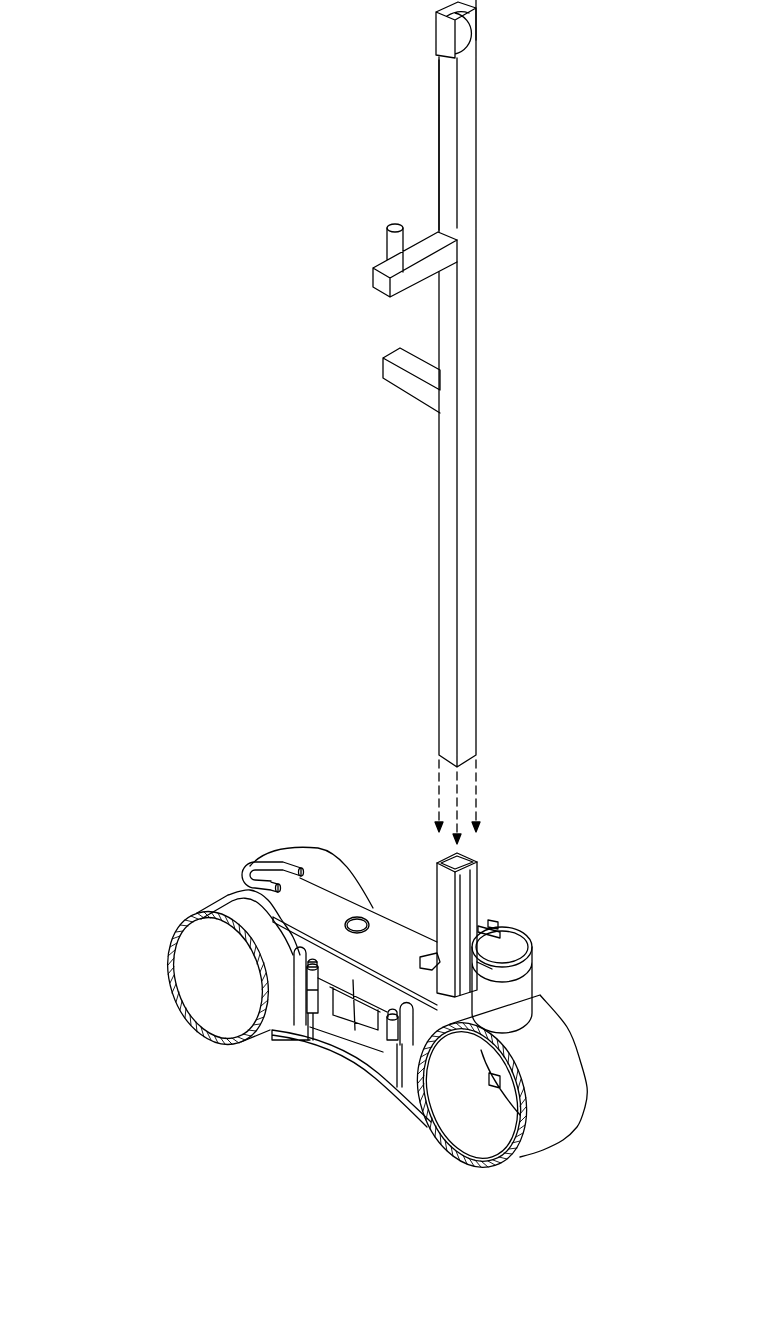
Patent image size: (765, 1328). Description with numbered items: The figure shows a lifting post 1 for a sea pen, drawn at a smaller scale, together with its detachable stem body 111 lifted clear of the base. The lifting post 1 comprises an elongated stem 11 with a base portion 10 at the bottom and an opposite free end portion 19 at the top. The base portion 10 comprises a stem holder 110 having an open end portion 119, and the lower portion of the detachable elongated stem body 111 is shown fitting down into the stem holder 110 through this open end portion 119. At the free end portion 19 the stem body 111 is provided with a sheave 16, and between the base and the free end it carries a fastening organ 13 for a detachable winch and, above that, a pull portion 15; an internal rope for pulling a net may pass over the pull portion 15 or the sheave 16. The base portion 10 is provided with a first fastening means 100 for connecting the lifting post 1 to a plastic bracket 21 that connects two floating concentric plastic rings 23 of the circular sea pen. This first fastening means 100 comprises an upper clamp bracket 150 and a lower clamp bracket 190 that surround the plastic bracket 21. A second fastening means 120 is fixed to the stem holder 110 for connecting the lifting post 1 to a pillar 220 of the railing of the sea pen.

The lifting post 1 is at (273, 307).
The first fastening means 100 is at (203, 853).
The base portion 10 is at (435, 945).
The elongated stem 11 is at (478, 892).
The stem holder 110 is at (475, 911).
The open end portion 119 is at (478, 858).
The second fastening means 120 is at (532, 965).
The detachable elongated stem body 111 is at (462, 648).
The fastening organ 13 is at (405, 378).
The pull portion 15 is at (427, 248).
The sheave 16 is at (455, 8).
The free end portion 19 is at (448, 75).
The plastic bracket 21 is at (247, 870).
The floating concentric plastic rings 23 is at (188, 1003).
The pillar 220 is at (524, 1002).
The lower clamp bracket 190 is at (327, 1032).
The upper clamp bracket 150 is at (362, 1045).